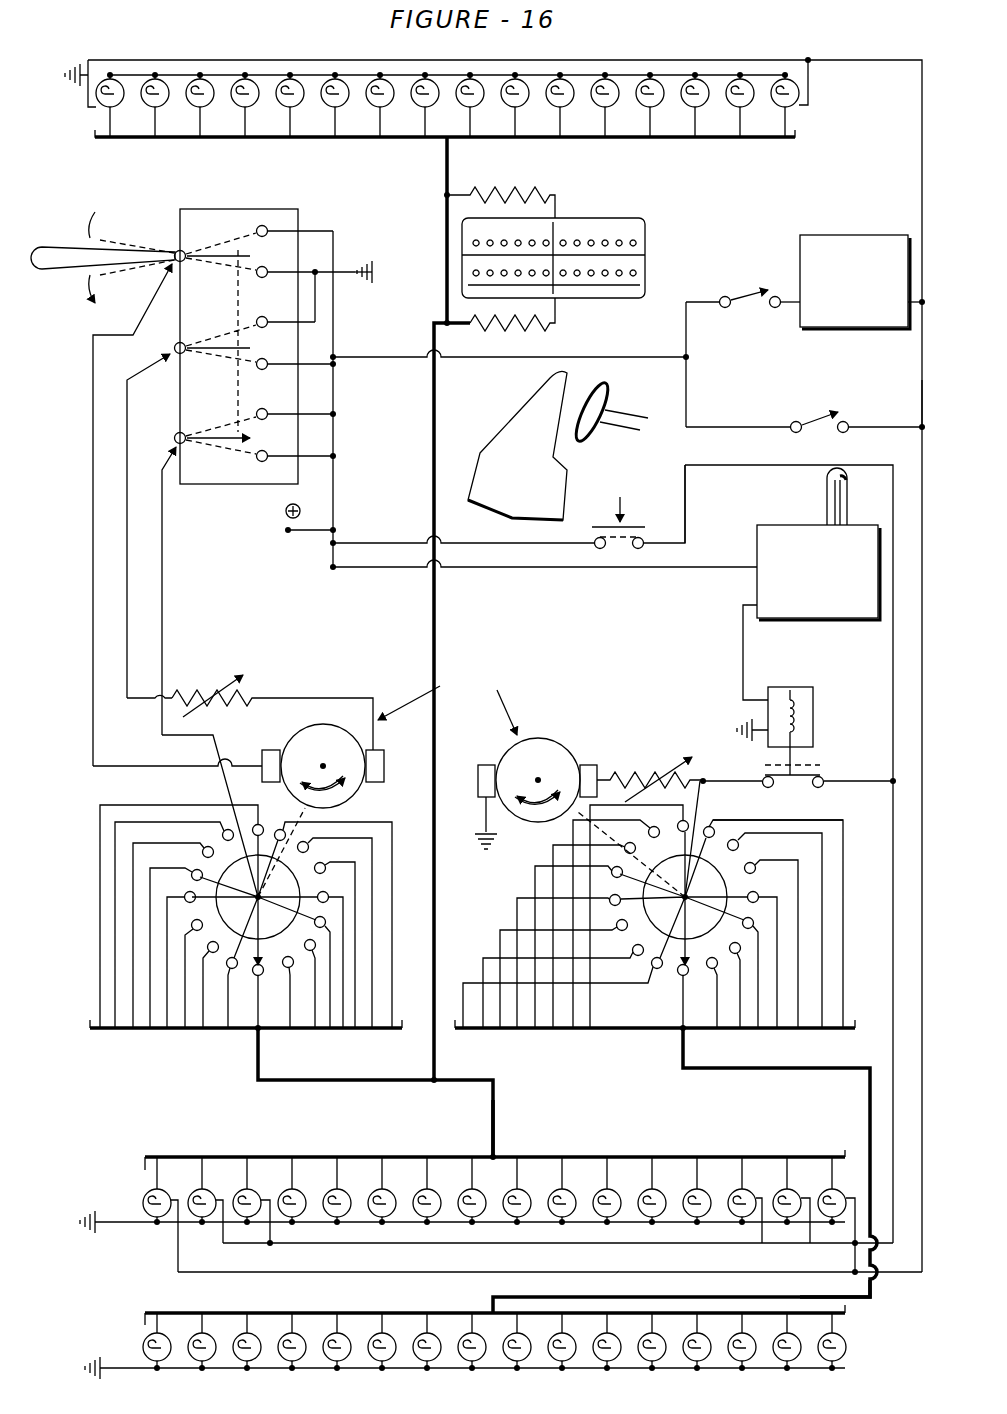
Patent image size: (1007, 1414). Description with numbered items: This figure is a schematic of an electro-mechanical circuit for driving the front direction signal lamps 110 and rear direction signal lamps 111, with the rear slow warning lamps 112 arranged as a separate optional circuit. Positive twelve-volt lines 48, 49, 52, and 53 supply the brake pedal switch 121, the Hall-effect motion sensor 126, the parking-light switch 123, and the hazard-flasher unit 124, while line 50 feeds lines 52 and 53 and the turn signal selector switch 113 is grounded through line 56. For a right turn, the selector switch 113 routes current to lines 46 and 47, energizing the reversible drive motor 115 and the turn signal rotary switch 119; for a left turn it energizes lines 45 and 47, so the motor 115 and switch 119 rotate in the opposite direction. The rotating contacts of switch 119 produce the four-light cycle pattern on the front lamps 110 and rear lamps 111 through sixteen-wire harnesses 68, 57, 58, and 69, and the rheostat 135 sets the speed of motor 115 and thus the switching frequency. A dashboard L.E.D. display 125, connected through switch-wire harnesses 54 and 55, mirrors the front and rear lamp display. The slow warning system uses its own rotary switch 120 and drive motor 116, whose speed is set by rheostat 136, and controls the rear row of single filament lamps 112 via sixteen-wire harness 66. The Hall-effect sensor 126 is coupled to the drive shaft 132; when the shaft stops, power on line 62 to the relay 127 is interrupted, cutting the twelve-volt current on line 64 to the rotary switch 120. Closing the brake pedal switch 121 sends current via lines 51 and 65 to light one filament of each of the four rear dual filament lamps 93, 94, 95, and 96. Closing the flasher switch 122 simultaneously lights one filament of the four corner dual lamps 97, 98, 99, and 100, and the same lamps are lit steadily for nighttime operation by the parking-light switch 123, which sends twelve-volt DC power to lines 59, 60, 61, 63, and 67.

The front direction signal lamps 110 is at (436, 86).
The corner dual filament lamp 99 is at (123, 110).
The corner dual filament lamp 100 is at (772, 100).
The line 59 is at (922, 86).
The 16-wire harness 58 is at (445, 172).
The switch-wire harness 54 is at (563, 184).
The switch-wire harness 55 is at (560, 322).
The dashboard L.E.D. display 125 is at (632, 212).
The turn signal selector switch 113 is at (330, 208).
The line 56 is at (349, 286).
The line 50 is at (383, 368).
The line 48 is at (386, 535).
The line 49 is at (388, 570).
The line 53 is at (680, 322).
The flasher switch 122 is at (721, 291).
The hazard-flasher unit 124 is at (861, 282).
The line 52 is at (674, 382).
The parking-light switch 123 is at (796, 418).
The line 60 is at (922, 406).
The line 61 is at (893, 434).
The line 51 is at (718, 463).
The brake pedal switch 121 is at (573, 459).
The drive shaft 132 is at (828, 494).
The Hall-effect motion sensor 126 is at (756, 580).
The line 62 is at (743, 648).
The relay 127 is at (720, 712).
The line 63 is at (851, 786).
The line 64 is at (778, 805).
The line 65 is at (896, 895).
The line 45 is at (93, 348).
The line 46 is at (127, 414).
The line 47 is at (162, 488).
The rheostat 135 is at (209, 684).
The rotary switch drive motor 115 is at (283, 728).
The switch drive motor 116 is at (554, 738).
The 16-wire harness 57 is at (458, 680).
The rheostat 136 is at (650, 772).
The turn signal rotary switch 119 is at (225, 1036).
The slow-warning rotary switch 120 is at (626, 1036).
The 16-wire harness 68 is at (387, 1085).
The 16-wire harness 69 is at (493, 1130).
The sixteen-wire harness 66 is at (853, 1078).
The line 67 is at (884, 1271).
The rear direction signal lamps 111 is at (501, 1212).
The corner dual filament lamp 98 is at (144, 1191).
The dual filament lamp 93 is at (188, 1192).
The dual filament lamp 94 is at (234, 1192).
The dual filament lamp 95 is at (746, 1185).
The dual filament lamp 96 is at (794, 1185).
The corner dual filament lamp 97 is at (848, 1181).
The rear row of single filament warning lamps 112 is at (465, 1353).